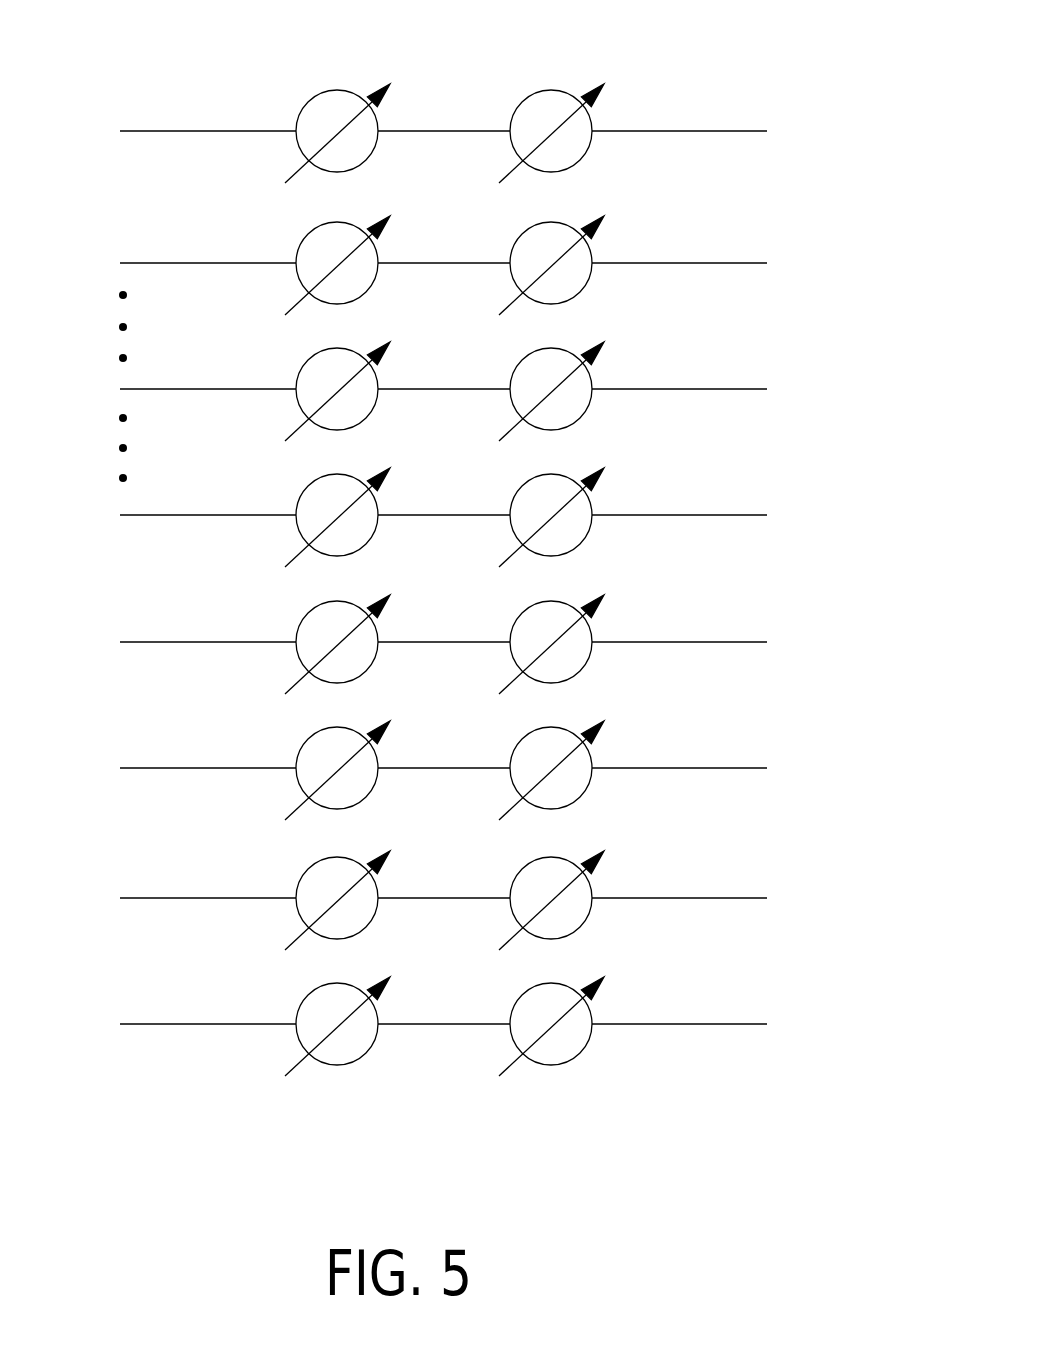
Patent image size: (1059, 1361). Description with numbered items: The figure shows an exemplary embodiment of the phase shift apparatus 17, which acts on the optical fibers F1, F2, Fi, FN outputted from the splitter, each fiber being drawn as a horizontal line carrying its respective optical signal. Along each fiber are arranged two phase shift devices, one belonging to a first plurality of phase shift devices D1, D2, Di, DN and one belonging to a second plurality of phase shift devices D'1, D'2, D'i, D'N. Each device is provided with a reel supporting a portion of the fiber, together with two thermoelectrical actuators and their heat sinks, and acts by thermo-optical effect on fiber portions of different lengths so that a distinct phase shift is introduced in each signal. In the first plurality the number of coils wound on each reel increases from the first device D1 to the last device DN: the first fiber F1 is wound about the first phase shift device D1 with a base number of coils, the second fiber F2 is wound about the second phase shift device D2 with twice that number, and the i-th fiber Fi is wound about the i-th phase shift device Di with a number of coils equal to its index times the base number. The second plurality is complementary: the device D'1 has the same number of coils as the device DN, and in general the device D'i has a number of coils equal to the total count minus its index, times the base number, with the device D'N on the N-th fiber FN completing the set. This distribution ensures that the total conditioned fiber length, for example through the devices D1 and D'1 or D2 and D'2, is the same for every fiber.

The phase shift apparatus 17 is at (876, 41).
The first optical fiber F1 is at (203, 131).
The second optical fiber F2 is at (137, 262).
The i-th optical fiber Fi is at (152, 516).
The N-th optical fiber FN is at (158, 1025).
The first phase shift device D1 is at (343, 97).
The second phase shift device D2 is at (343, 224).
The i-th phase shift device Di is at (297, 503).
The N-th phase shift device DN is at (333, 1065).
The first phase shift device of the second plurality D'1 is at (570, 98).
The second phase shift device of the second plurality D'2 is at (578, 232).
The i-th phase shift device of the second plurality D'i is at (584, 489).
The N-th phase shift device of the second plurality D'N is at (558, 1063).